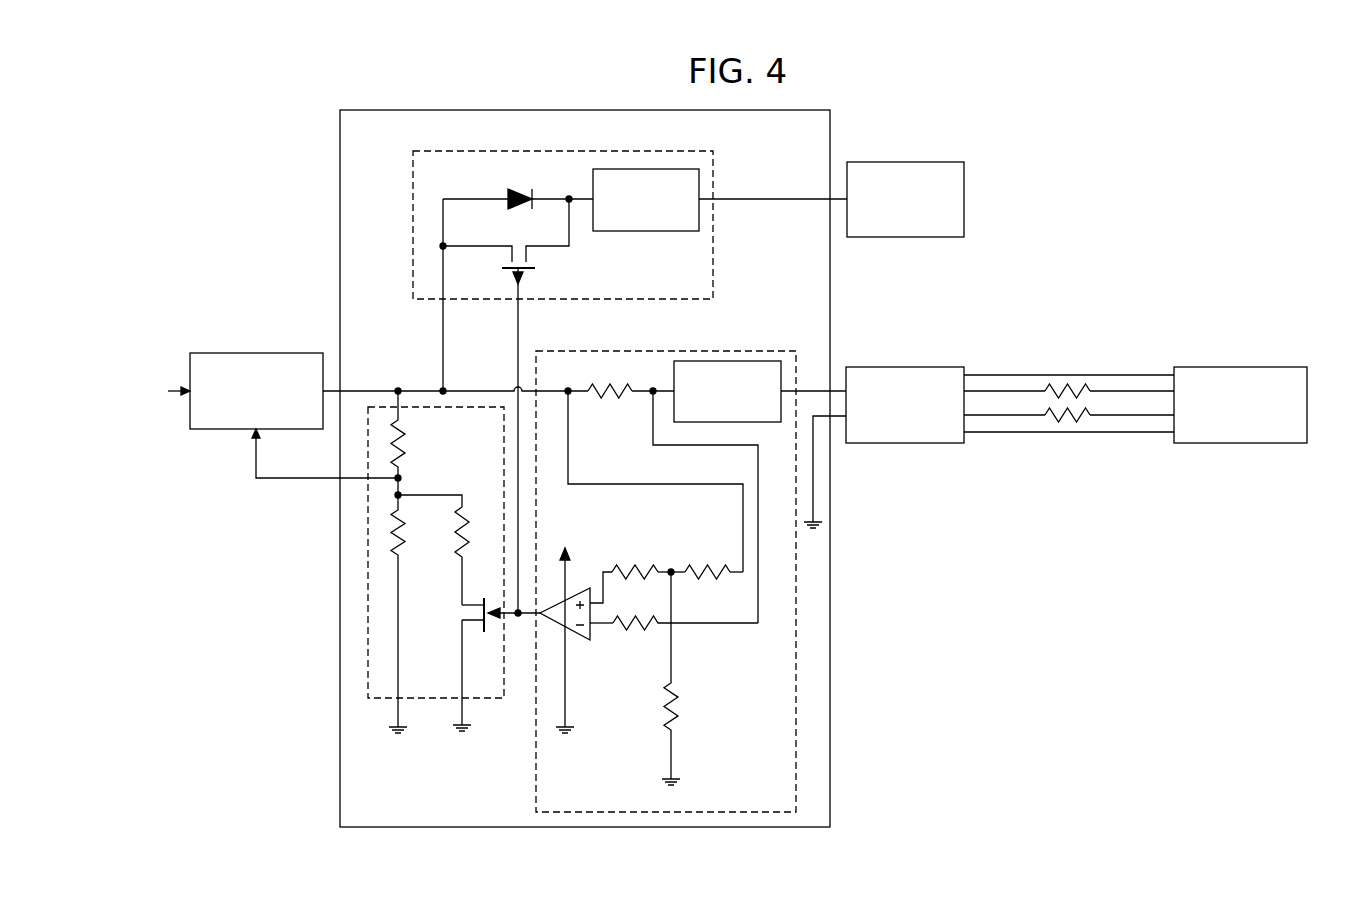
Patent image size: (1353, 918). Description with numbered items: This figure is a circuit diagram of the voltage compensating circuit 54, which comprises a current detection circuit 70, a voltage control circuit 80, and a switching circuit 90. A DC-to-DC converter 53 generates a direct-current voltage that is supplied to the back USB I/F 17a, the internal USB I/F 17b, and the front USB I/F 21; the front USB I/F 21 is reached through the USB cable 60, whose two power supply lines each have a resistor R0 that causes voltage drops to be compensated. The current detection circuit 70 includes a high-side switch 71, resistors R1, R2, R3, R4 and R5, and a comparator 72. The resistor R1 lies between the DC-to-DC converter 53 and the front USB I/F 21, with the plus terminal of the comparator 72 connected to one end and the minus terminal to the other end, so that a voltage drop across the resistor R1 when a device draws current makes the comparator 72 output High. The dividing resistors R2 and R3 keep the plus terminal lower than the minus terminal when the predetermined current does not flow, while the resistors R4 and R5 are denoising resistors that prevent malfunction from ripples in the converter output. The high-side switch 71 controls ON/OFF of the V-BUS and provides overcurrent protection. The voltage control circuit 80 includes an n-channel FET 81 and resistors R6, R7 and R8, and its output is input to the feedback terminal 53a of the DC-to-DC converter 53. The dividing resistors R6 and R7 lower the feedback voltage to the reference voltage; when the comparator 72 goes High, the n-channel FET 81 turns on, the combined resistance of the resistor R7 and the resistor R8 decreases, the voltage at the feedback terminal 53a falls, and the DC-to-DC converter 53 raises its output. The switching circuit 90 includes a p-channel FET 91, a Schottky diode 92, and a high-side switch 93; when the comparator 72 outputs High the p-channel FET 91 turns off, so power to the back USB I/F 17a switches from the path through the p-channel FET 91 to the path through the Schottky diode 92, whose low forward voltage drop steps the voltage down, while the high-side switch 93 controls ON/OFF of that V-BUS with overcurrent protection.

The voltage compensating circuit 54 is at (340, 137).
The DC-to-DC converter 53 is at (216, 353).
The feedback terminal 53a is at (250, 433).
The switching circuit 90 is at (713, 173).
The Schottky diode 92 is at (517, 187).
The p-channel FET 91 is at (530, 259).
The high-side switch 93 is at (665, 169).
The back USB I/F 17a is at (928, 162).
The voltage control circuit 80 is at (368, 660).
The resistor R6 is at (405, 441).
The resistor R7 is at (390, 530).
The resistor R8 is at (455, 548).
The n-channel FET 81 is at (470, 625).
The current detection circuit 70 is at (760, 351).
The resistor R1 is at (612, 379).
The high-side switch 71 is at (690, 361).
The comparator 72 is at (573, 637).
The resistor R4 is at (631, 565).
The resistor R2 is at (709, 565).
The resistor R5 is at (630, 640).
The resistor R3 is at (678, 708).
The internal USB I/F 17b is at (927, 367).
The USB cable 60 is at (1108, 375).
The resistor R0 is at (1062, 418).
The front USB I/F 21 is at (1268, 367).